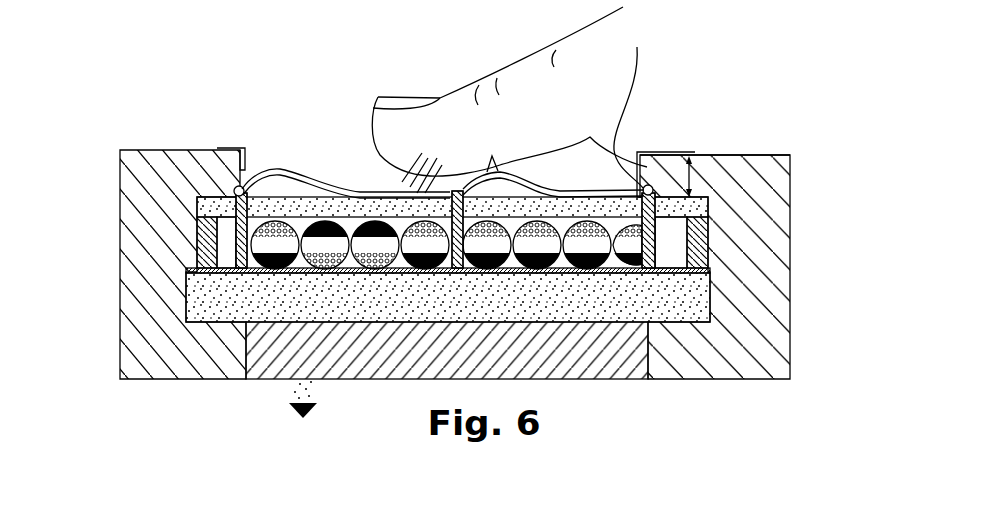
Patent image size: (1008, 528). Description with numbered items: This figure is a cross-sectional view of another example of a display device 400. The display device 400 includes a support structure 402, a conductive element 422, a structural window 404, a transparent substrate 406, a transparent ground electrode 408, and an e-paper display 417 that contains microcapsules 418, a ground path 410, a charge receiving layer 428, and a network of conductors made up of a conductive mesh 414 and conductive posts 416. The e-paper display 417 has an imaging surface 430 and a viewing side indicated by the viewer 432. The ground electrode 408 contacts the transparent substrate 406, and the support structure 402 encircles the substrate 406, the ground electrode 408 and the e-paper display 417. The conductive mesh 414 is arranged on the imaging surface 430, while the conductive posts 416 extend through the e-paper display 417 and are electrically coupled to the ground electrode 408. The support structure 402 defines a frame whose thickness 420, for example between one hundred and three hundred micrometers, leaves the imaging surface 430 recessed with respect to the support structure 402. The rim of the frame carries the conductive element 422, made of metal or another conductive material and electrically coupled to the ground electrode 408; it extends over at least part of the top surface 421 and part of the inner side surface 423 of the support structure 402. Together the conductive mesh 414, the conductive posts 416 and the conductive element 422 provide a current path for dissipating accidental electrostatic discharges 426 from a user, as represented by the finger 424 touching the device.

The display device 400 is at (325, 48).
The support structure 402 is at (779, 352).
The structural window 404 is at (606, 369).
The transparent substrate 406 is at (429, 304).
The transparent ground electrode 408 is at (710, 272).
The ground path 410 is at (200, 196).
The conductive mesh 414 is at (282, 172).
The conductive posts 416 is at (663, 207).
The e-paper display 417 is at (210, 238).
The microcapsules 418 is at (300, 270).
The thickness 420 is at (692, 180).
The top surface 421 is at (772, 154).
The conductive element 422 is at (238, 148).
The inner side surface 423 is at (630, 106).
The finger 424 is at (523, 76).
The electrostatic discharge 426 is at (402, 181).
The charge receiving layer 428 is at (697, 205).
The imaging surface 430 is at (273, 190).
The viewer 432 is at (311, 417).